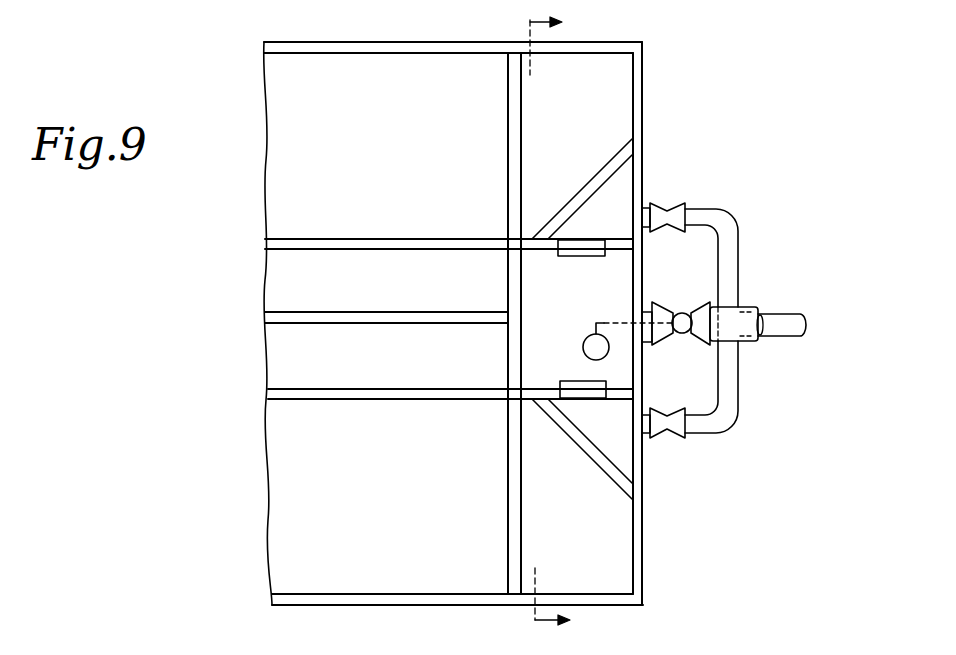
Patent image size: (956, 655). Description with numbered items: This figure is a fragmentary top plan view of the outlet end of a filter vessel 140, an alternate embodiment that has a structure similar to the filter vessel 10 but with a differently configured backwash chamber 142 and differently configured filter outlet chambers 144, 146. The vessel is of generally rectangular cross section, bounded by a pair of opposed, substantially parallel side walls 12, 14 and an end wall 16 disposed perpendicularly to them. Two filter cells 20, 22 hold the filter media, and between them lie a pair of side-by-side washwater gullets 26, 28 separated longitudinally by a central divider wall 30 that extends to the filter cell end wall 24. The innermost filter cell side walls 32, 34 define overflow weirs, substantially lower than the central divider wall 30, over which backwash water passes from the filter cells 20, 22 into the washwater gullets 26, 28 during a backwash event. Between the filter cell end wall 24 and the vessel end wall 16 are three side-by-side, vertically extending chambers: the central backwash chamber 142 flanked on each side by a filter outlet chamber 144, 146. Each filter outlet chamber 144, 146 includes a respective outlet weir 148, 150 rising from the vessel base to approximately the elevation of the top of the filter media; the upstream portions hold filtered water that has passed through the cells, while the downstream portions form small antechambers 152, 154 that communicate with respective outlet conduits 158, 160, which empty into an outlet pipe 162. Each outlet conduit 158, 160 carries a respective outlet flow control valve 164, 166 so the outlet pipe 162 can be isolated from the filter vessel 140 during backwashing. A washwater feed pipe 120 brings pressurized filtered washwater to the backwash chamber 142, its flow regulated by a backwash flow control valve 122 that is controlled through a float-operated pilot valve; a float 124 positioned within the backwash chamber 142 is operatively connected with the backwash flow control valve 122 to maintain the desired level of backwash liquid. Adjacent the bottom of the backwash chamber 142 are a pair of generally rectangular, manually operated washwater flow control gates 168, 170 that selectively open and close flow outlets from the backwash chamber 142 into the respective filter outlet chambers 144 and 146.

The filter vessel 10 is at (533, 323).
The side wall 12 is at (437, 42).
The side wall 14 is at (375, 605).
The end wall 16 is at (641, 82).
The filter cell 20 is at (305, 82).
The filter cell 22 is at (300, 563).
The filter cell end wall 24 is at (508, 113).
The washwater gullet 26 is at (428, 267).
The washwater gullet 28 is at (447, 378).
The central divider wall 30 is at (353, 312).
The filter cell side wall 32 is at (343, 238).
The filter cell side wall 34 is at (365, 402).
The washwater feed pipe 120 is at (745, 307).
The backwash flow control valve 122 is at (680, 346).
The float 124 is at (590, 338).
The filter vessel 140 is at (298, 31).
The backwash chamber 142 is at (530, 334).
The filter outlet chamber 144 is at (606, 72).
The filter outlet chamber 146 is at (617, 573).
The outlet weir 148 is at (601, 172).
The outlet weir 150 is at (600, 463).
The antechamber 152 is at (617, 183).
The antechamber 154 is at (623, 447).
The outlet conduit 158 is at (730, 213).
The outlet conduit 160 is at (735, 428).
The outlet pipe 162 is at (782, 317).
The outlet flow control valve 164 is at (667, 211).
The outlet flow control valve 166 is at (673, 438).
The washwater flow control gate 168 is at (597, 258).
The washwater flow control gate 170 is at (590, 380).